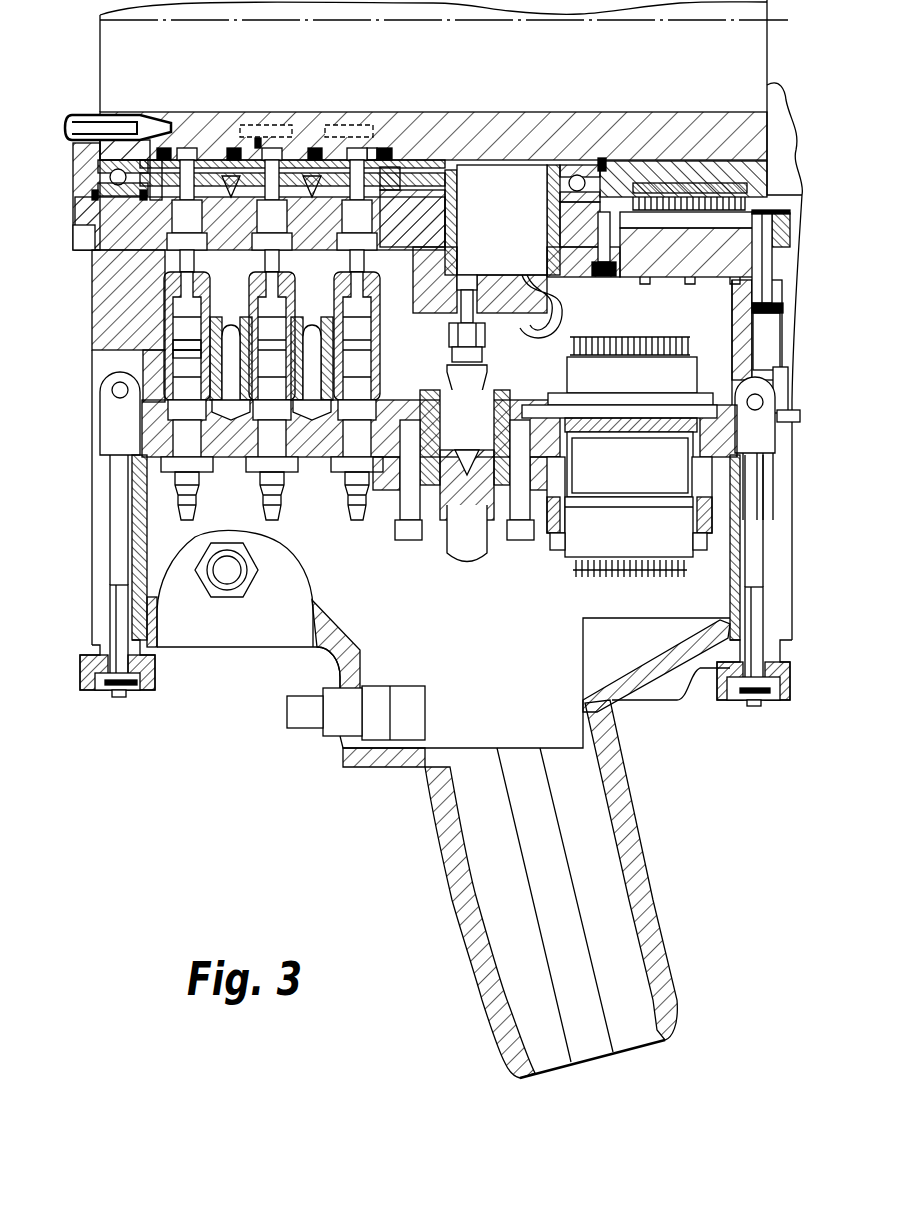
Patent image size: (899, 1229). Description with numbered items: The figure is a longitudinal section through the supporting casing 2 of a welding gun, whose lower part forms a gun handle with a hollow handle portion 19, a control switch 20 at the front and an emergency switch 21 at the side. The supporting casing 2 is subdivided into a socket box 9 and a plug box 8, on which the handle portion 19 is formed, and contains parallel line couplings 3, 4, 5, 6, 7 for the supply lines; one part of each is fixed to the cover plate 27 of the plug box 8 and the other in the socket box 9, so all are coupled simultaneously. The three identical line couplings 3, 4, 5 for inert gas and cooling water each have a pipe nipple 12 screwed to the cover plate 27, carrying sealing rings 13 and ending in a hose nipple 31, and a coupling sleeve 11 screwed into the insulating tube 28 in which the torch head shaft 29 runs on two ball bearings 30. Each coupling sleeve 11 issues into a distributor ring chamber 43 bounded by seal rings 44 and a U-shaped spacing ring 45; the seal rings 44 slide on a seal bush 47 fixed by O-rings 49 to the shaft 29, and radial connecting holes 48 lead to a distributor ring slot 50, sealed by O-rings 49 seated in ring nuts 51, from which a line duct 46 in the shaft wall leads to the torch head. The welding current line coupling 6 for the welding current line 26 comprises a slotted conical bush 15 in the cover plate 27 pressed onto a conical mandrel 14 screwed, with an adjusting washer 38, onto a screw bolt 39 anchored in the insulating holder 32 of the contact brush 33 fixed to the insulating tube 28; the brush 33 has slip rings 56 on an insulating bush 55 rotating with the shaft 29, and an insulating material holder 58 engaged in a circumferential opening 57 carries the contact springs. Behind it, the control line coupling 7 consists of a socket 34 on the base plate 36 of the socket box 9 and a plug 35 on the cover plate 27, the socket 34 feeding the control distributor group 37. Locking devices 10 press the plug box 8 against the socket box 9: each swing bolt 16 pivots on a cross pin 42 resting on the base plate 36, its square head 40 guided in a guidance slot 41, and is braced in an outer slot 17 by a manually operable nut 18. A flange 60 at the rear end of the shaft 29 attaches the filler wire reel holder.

The supporting casing 2 is at (742, 330).
The line coupling 3 is at (196, 330).
The line coupling 4 is at (282, 328).
The line coupling 5 is at (362, 328).
The welding current line coupling 6 is at (487, 385).
The control line coupling 7 is at (538, 528).
The plug box 8 is at (637, 695).
The socket box 9 is at (722, 325).
The locking device 10 is at (793, 504).
The coupling sleeve 11 is at (112, 298).
The pipe nipple 12 is at (178, 345).
The sealing rings 13 is at (176, 356).
The conical mandrel 14 is at (440, 383).
The conical bush 15 is at (436, 385).
The swing bolt 16 is at (118, 538).
The outer slot 17 is at (118, 592).
The nut 18 is at (150, 690).
The handle portion 19 is at (438, 826).
The control switch 20 is at (298, 728).
The emergency switch 21 is at (228, 578).
The welding current line 26 is at (457, 553).
The cover plate 27 is at (240, 460).
The insulating tube 28 is at (784, 242).
The torch head shaft 29 is at (317, 120).
The ball bearings 30 is at (132, 138).
The hose nipples 31 is at (184, 520).
The insulating holder 32 is at (555, 300).
The contact brush 33 is at (510, 168).
The socket 34 is at (650, 377).
The plug 35 is at (590, 542).
The base plate 36 is at (570, 395).
The control distributor group 37 is at (727, 165).
The washer 38 is at (487, 340).
The screw bolt 39 is at (478, 274).
The square head 40 is at (768, 438).
The guidance slot 41 is at (790, 415).
The cross pin 42 is at (112, 402).
The distributor ring chamber 43 is at (170, 148).
The seal rings 44 is at (226, 176).
The spacing ring 45 is at (160, 158).
The line duct 46 is at (246, 126).
The seal bush 47 is at (452, 164).
The connecting holes 48 is at (372, 148).
The O-rings 49 is at (386, 148).
The distributor ring slot 50 is at (259, 138).
The ring nut 51 is at (436, 160).
The insulating bush 55 is at (688, 170).
The slip rings 56 is at (665, 172).
The circumferential opening 57 is at (745, 220).
The insulating material holder 58 is at (660, 274).
The flange 60 is at (782, 170).